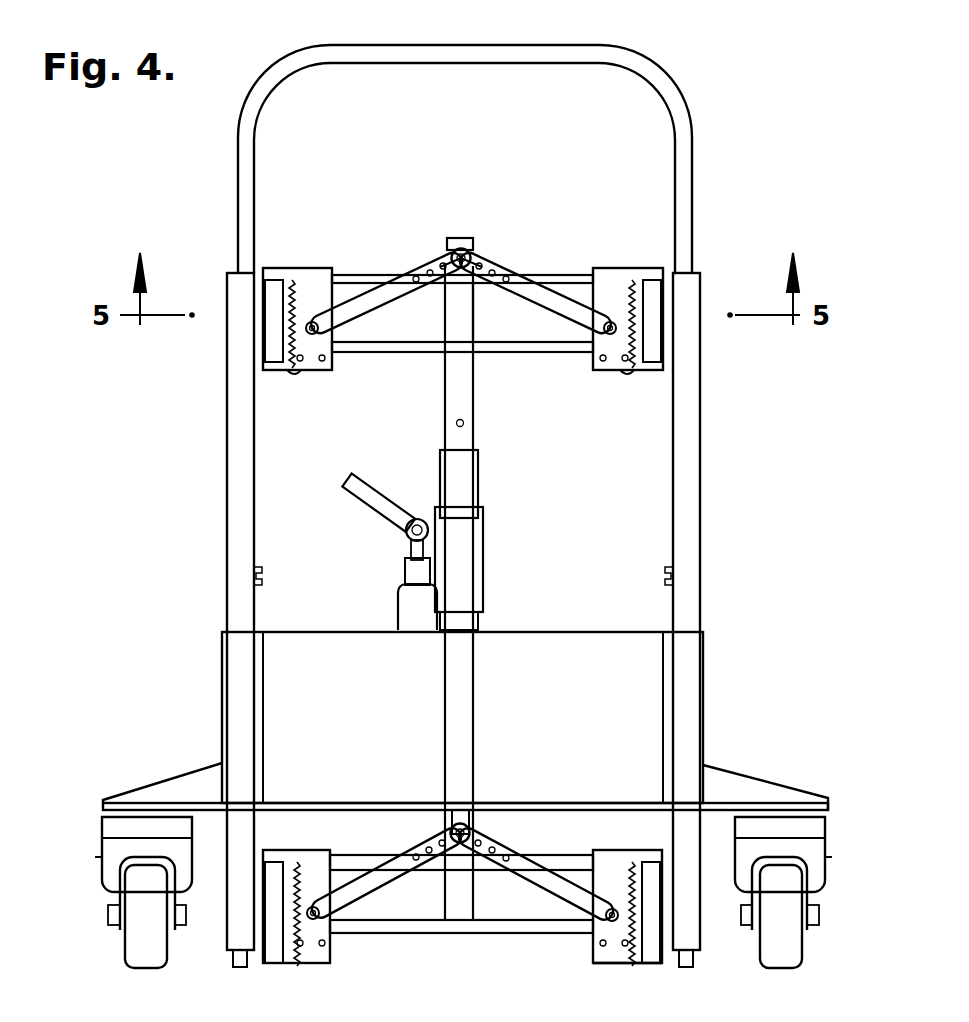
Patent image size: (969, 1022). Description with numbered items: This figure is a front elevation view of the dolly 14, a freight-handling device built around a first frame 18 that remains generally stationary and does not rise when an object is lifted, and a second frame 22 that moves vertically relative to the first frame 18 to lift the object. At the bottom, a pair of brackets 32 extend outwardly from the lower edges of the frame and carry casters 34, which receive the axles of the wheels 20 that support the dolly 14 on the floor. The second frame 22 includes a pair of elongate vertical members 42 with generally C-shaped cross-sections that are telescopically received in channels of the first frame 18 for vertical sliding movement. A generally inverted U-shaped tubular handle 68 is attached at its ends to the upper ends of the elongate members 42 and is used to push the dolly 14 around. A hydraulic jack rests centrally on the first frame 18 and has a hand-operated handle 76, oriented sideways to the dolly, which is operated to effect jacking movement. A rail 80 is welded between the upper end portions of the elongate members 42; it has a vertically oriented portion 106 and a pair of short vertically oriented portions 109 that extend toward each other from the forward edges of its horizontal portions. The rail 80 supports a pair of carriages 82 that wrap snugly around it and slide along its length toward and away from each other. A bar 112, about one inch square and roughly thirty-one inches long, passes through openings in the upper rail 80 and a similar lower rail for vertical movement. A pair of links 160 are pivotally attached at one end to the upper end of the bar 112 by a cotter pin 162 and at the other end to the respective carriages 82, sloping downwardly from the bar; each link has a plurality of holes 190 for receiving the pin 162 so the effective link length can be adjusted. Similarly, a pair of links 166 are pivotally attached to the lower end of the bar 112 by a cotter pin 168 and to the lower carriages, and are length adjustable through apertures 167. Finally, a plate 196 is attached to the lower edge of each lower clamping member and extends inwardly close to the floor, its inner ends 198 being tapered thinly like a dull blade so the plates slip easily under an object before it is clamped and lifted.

The dolly 14 is at (722, 495).
The first frame 18 is at (572, 632).
The wheels 20 is at (160, 956).
The second frame 22 is at (227, 508).
The brackets 32 is at (160, 788).
The casters 34 is at (111, 892).
The elongate vertical members 42 is at (255, 420).
The tubular handle 68 is at (594, 46).
The hand-operated handle 76 is at (386, 489).
The rail 80 is at (550, 274).
The carriages 82 is at (320, 268).
The vertically oriented portion 106 is at (576, 290).
The vertically oriented portions 109 is at (360, 274).
The bar 112 is at (474, 688).
The links 160 is at (418, 264).
The cotter pin 162 is at (457, 238).
The links 166 is at (368, 900).
The apertures 167 is at (418, 852).
The cotter pin 168 is at (465, 814).
The holes 190 is at (422, 283).
The plate 196 is at (624, 964).
The inner ends 198 is at (332, 963).